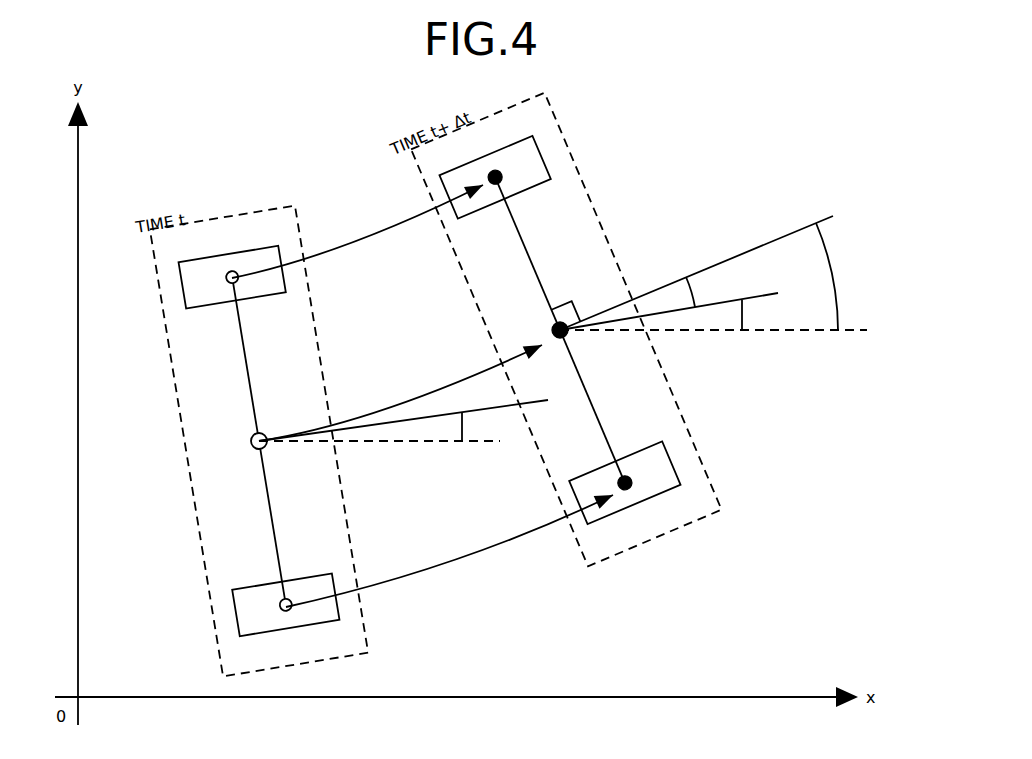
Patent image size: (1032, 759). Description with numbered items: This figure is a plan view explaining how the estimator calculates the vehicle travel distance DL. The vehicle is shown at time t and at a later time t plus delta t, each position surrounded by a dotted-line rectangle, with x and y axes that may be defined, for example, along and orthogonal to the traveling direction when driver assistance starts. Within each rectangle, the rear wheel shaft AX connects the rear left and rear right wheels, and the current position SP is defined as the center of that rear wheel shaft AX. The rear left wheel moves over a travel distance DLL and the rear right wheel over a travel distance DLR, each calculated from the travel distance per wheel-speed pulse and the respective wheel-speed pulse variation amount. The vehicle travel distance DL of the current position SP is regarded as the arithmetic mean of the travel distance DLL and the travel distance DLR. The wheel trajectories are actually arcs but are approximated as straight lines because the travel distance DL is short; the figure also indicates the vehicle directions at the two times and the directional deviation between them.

The rear wheel shaft AX is at (249, 396).
The current position SP is at (250, 442).
The vehicle travel distance DL is at (400, 393).
The travel distance of the rear left wheel DLL is at (357, 231).
The travel distance of the rear right wheel DLR is at (449, 551).